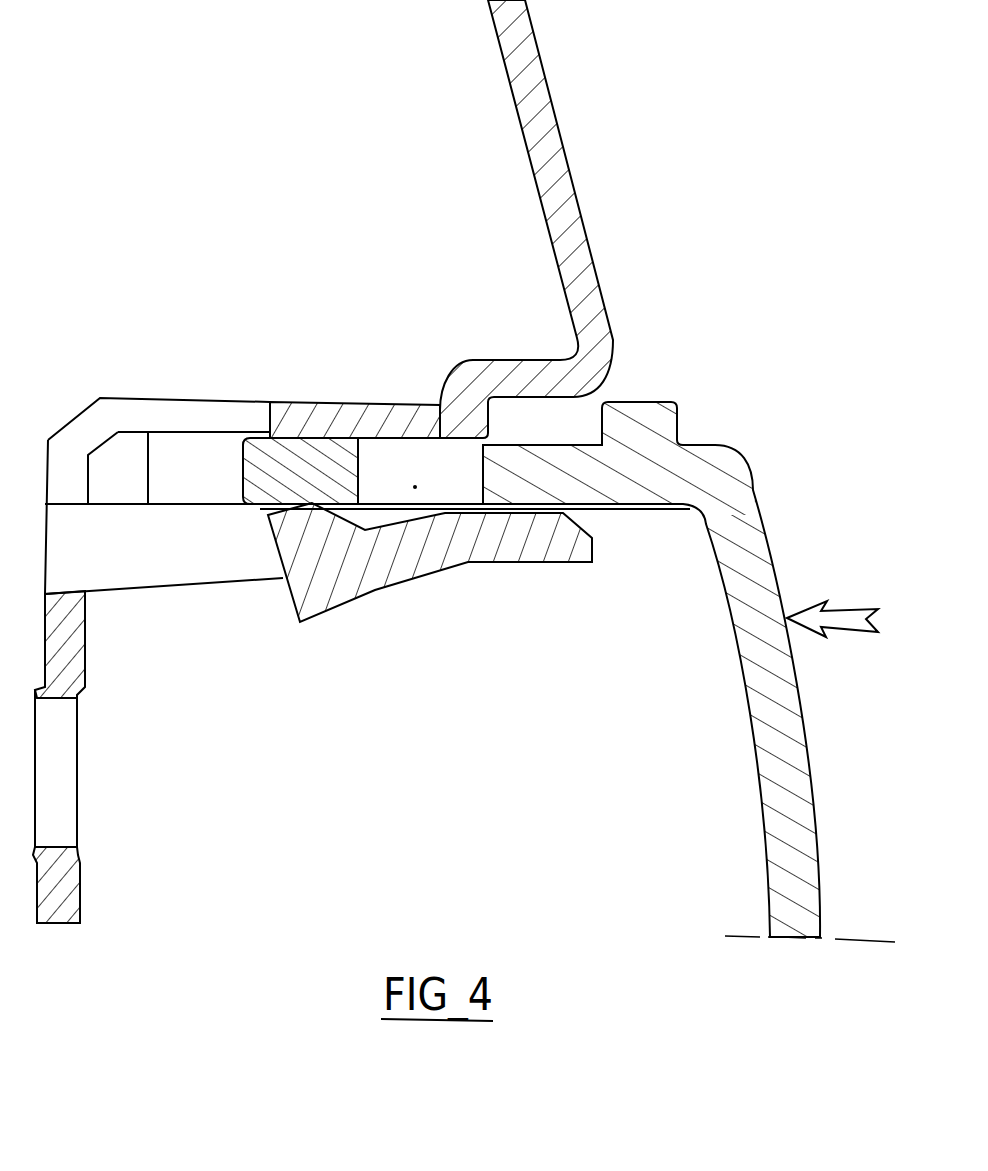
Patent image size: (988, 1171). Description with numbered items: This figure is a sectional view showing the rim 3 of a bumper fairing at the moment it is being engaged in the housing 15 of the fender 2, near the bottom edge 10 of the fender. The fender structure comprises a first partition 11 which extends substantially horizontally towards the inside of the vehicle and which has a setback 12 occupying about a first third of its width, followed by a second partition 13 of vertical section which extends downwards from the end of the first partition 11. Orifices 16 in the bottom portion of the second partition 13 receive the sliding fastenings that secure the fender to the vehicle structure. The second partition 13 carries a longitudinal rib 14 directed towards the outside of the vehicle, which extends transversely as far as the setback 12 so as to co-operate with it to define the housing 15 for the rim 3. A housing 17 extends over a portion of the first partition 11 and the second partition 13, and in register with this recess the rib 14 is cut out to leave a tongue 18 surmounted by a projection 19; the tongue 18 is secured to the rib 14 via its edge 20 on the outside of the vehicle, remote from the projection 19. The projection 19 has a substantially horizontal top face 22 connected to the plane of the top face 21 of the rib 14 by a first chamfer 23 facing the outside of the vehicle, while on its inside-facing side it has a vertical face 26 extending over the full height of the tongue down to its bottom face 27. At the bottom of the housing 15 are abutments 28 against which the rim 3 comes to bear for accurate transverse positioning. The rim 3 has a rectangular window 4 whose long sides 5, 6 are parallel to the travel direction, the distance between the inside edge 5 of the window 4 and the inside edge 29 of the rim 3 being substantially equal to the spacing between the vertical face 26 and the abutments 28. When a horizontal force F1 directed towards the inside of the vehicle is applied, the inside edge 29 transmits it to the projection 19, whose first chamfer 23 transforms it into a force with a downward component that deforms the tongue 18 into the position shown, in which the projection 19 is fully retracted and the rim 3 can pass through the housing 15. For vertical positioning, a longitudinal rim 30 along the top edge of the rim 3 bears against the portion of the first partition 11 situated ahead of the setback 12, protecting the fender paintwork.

The fender 2 is at (543, 140).
The rim 3 is at (615, 483).
The rectangular window 4 is at (420, 463).
The long side 5 is at (365, 463).
The long side 6 is at (476, 472).
The bottom edge 10 is at (623, 349).
The first partition 11 is at (383, 425).
The setback 12 is at (462, 360).
The second partition 13 is at (70, 650).
The longitudinal rib 14 is at (177, 553).
The housing 15 is at (542, 436).
The orifices 16 is at (57, 778).
The housing 17 is at (160, 412).
The tongue 18 is at (408, 563).
The projection 19 is at (302, 536).
The edge 20 is at (481, 569).
The top face 21 is at (204, 492).
The top face 22 is at (267, 513).
The first chamfer 23 is at (374, 535).
The vertical face 26 is at (266, 545).
The bottom face 27 is at (323, 619).
The abutments 28 is at (110, 453).
The inside edge 29 is at (247, 480).
The longitudinal rim 30 is at (655, 430).
The horizontal force F1 is at (847, 618).